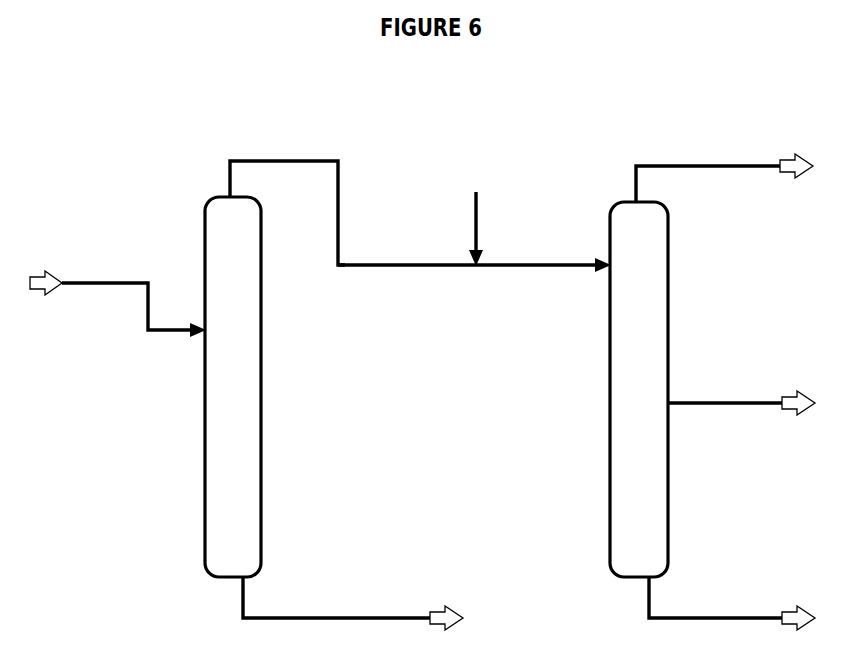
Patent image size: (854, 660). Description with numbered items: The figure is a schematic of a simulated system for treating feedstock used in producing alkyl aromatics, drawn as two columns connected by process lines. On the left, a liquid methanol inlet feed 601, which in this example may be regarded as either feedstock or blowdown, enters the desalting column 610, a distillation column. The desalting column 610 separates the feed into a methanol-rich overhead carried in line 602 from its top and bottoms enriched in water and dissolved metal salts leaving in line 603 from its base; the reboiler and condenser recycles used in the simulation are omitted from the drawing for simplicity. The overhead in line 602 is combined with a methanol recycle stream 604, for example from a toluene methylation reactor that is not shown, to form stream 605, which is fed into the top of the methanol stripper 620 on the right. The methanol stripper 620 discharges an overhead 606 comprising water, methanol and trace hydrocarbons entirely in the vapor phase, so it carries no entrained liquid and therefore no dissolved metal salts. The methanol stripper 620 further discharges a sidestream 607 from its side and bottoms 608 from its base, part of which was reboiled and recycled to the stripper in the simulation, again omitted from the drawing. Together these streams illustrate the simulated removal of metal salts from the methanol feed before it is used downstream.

The liquid methanol inlet feed 601 is at (118, 301).
The methanol-rich overhead line 602 is at (287, 205).
The bottoms line 603 is at (353, 603).
The methanol recycle stream 604 is at (490, 229).
The combined feed stream 605 is at (474, 258).
The methanol stripper overhead 606 is at (724, 173).
The sidestream 607 is at (741, 400).
The methanol stripper bottoms 608 is at (732, 603).
The desalting column 610 is at (225, 512).
The methanol stripper 620 is at (638, 505).